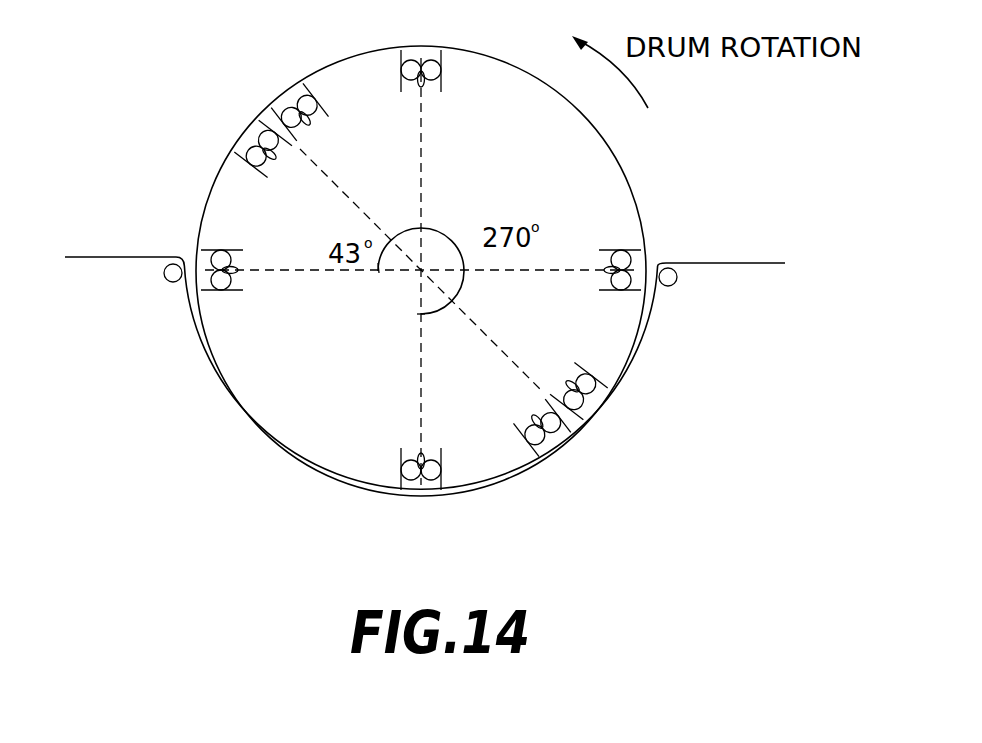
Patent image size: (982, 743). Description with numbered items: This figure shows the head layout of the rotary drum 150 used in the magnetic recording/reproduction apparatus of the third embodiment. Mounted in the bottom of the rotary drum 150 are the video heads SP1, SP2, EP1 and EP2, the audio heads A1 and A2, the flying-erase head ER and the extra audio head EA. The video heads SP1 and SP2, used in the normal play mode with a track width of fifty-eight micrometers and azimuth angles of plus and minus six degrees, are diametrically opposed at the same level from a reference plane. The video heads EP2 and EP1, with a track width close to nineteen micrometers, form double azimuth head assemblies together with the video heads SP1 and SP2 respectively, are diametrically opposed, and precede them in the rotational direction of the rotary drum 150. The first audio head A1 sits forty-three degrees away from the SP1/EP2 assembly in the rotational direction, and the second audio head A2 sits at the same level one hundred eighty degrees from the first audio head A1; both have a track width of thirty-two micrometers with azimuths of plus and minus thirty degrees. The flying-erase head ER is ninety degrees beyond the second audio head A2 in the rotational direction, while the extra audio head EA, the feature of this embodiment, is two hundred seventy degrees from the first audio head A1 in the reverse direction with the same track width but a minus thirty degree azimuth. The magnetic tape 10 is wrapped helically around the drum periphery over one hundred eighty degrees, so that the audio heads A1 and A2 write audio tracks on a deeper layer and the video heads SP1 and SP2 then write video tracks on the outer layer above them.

The magnetic tape 10 is at (118, 258).
The rotary drum 150 is at (603, 171).
The flying-erase head ER is at (445, 78).
The extra audio head EA is at (400, 472).
The first audio head A1 is at (212, 250).
The second audio head A2 is at (627, 252).
The video head EP1 is at (600, 382).
The video head EP2 is at (243, 167).
The video head SP1 is at (320, 100).
The video head SP2 is at (532, 450).